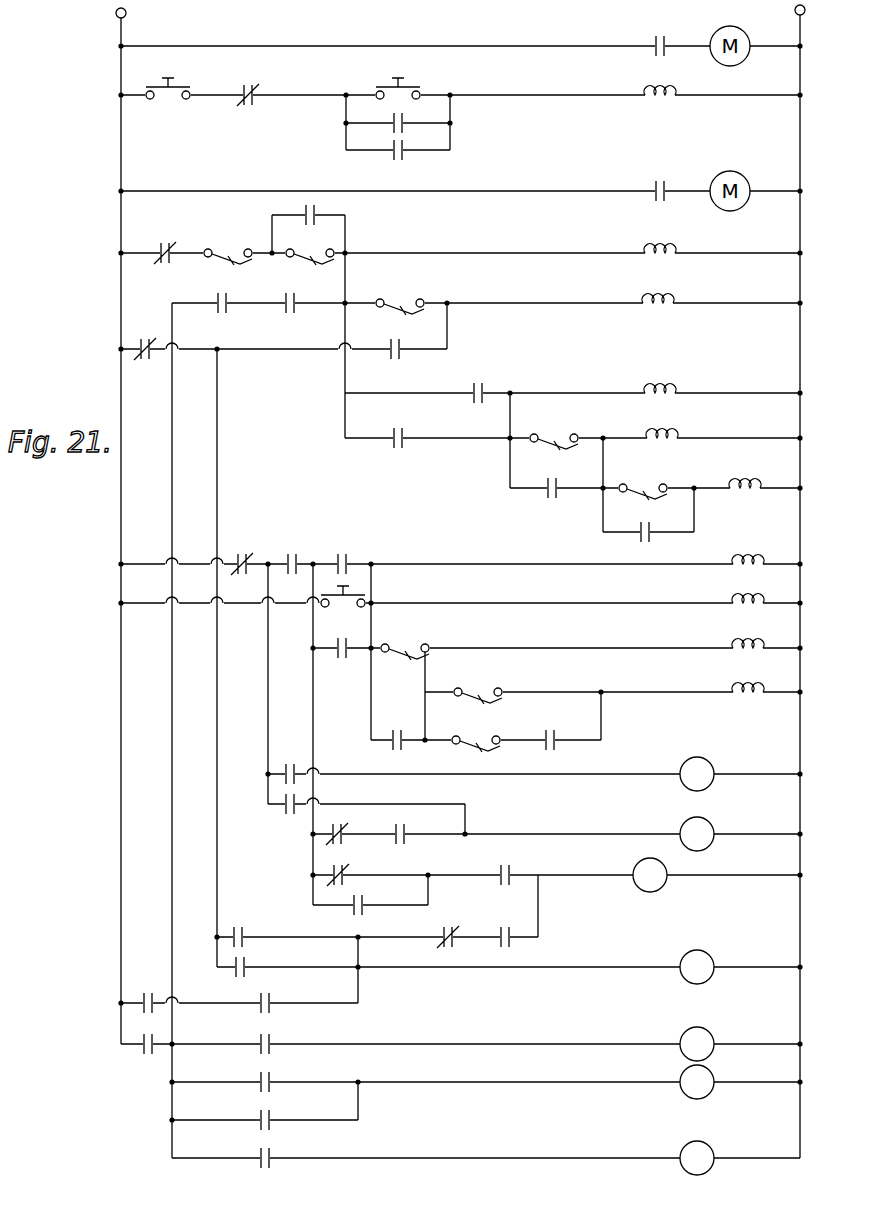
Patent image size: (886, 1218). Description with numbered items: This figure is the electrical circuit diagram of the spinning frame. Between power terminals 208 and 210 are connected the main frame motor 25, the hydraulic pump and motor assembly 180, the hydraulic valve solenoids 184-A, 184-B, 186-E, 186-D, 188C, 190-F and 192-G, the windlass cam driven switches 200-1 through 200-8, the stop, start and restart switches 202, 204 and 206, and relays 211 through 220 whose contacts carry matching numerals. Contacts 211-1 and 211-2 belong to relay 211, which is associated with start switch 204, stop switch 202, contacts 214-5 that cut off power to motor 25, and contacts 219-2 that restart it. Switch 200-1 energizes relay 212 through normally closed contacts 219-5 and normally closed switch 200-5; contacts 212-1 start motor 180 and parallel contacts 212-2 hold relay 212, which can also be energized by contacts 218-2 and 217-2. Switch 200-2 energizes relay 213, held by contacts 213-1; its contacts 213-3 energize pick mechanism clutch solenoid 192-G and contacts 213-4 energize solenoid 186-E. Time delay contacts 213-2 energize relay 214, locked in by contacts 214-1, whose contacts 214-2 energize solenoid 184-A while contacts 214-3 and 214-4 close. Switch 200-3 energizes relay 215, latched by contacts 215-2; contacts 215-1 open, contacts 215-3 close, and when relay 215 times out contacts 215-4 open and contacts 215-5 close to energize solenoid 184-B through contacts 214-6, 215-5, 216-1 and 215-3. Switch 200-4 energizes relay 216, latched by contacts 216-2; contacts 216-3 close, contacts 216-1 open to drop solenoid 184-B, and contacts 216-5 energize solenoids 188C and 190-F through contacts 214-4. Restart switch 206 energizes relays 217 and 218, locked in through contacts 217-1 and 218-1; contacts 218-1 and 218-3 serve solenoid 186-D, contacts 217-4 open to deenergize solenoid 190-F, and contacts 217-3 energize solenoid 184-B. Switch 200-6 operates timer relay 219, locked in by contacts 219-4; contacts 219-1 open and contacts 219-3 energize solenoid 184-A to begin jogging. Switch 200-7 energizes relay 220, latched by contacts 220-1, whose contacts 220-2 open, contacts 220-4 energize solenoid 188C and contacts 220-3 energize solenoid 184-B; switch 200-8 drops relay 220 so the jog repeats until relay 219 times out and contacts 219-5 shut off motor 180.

The power terminal 208 is at (119, 30).
The power terminal 210 is at (800, 20).
The relay contacts 211-1 is at (660, 38).
The main frame motor 25 is at (712, 32).
The start switch 204 is at (184, 90).
The relay contacts 214-5 is at (256, 88).
The stop switch 202 is at (420, 84).
The relay contacts 211-2 is at (408, 110).
The relay contacts 219-2 is at (408, 138).
The relay 211 is at (654, 86).
The relay contacts 212-1 is at (660, 175).
The hydraulic pump and motor assembly 180 is at (735, 171).
The normally closed relay contacts 219-5 is at (172, 228).
The windlass cam driven switch 200-5 is at (240, 238).
The relay contacts 212-2 is at (318, 210).
The windlass cam driven switch 200-1 is at (322, 253).
The relay 212 is at (652, 244).
The relay contacts 218-2 is at (236, 286).
The relay contacts 217-2 is at (305, 286).
The windlass cam driven switch 200-2 is at (415, 288).
The relay 213 is at (658, 284).
The relay contacts 215-1 is at (150, 363).
The relay contacts 213-1 is at (397, 360).
The time delay relay contacts 213-2 is at (481, 386).
The relay 214 is at (662, 384).
The relay contacts 214-1 is at (404, 426).
The windlass cam driven switch 200-3 is at (568, 420).
The relay 215 is at (668, 430).
The relay contacts 215-2 is at (555, 499).
The windlass cam driven switch 200-4 is at (650, 487).
The relay 216 is at (750, 478).
The relay contacts 216-2 is at (648, 543).
The relay 217 is at (754, 556).
The relay contacts 215-4 is at (244, 552).
The relay contacts 216-3 is at (310, 548).
The relay contacts 217-1 is at (350, 555).
The restart switch 206 is at (365, 586).
The relay 218 is at (736, 592).
The relay contacts 218-1 is at (358, 634).
The windlass cam driven switch 200-6 is at (412, 658).
The timer relay 219 is at (744, 640).
The windlass cam driven switch 200-7 is at (478, 686).
The relay 220 is at (744, 684).
The relay contacts 219-4 is at (398, 752).
The windlass cam driven switch 200-8 is at (490, 738).
The relay contacts 220-1 is at (553, 751).
The pick mechanism clutch solenoid 192-G is at (702, 762).
The relay contacts 213-3 is at (297, 756).
The relay contacts 214-2 is at (288, 816).
The relay contacts 220-2 is at (340, 822).
The relay contacts 219-3 is at (404, 822).
The hydraulic valve solenoid 184-A is at (702, 826).
The relay contacts 219-1 is at (342, 865).
The relay contacts 217-3 is at (506, 866).
The hydraulic valve solenoid 184-B is at (660, 887).
The relay contacts 220-3 is at (356, 916).
The relay contacts 213-4 is at (242, 924).
The relay contacts 216-1 is at (448, 926).
The relay contacts 215-3 is at (508, 948).
The relay contacts 214-3 is at (248, 966).
The hydraulic valve solenoid 186-E is at (704, 958).
The relay contacts 214-6 is at (142, 1001).
The relay contacts 215-5 is at (272, 1000).
The relay contacts 216-5 is at (146, 1056).
The relay contacts 218-3 is at (272, 1040).
The hydraulic valve solenoid 186-D is at (710, 1032).
The relay contacts 214-4 is at (272, 1078).
The hydraulic valve solenoid 188C is at (714, 1070).
The relay contacts 220-4 is at (272, 1116).
The relay contacts 217-4 is at (272, 1154).
The hydraulic valve solenoid 190-F is at (710, 1148).